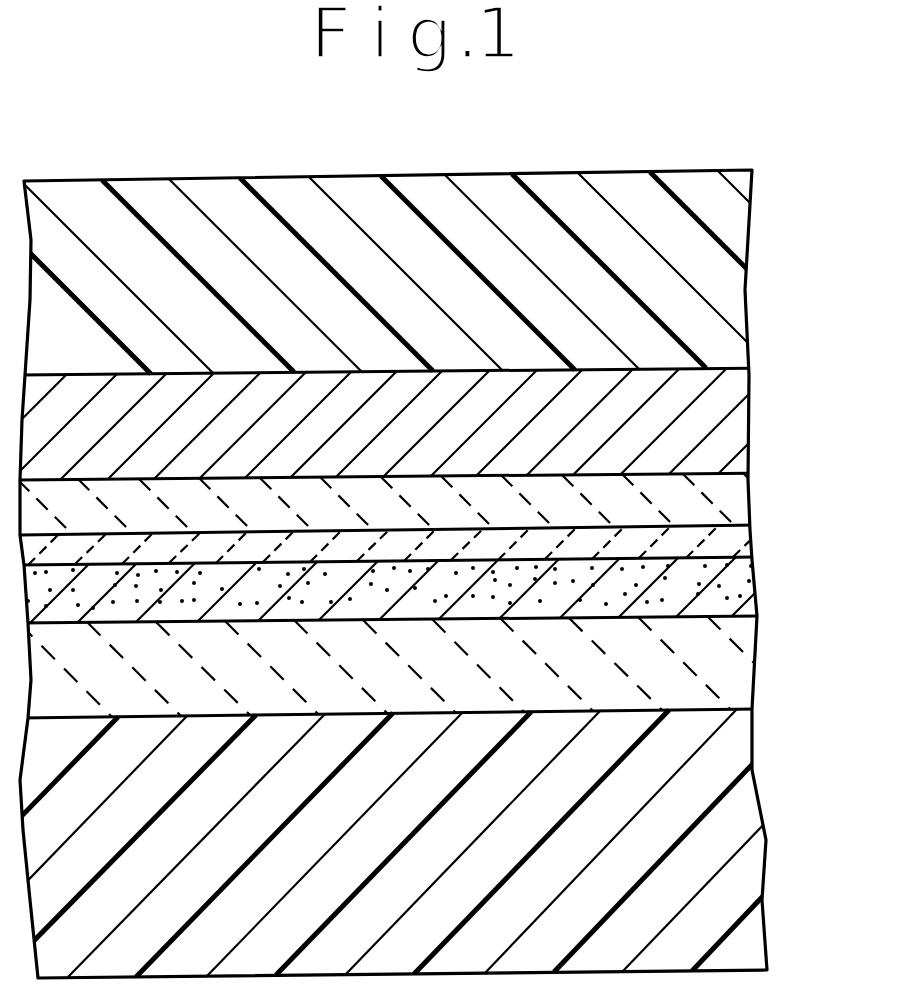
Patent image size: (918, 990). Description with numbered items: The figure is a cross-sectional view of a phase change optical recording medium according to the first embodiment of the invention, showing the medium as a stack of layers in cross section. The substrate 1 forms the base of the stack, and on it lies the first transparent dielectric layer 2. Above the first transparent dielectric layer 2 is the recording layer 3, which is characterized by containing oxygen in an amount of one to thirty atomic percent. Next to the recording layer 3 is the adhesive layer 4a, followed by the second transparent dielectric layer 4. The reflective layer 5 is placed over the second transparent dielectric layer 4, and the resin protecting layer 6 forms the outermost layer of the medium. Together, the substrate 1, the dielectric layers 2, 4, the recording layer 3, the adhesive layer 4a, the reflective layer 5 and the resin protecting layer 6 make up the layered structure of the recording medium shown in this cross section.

The substrate 1 is at (735, 810).
The first transparent dielectric layer 2 is at (738, 662).
The recording layer 3 is at (732, 590).
The second transparent dielectric layer 4 is at (732, 503).
The adhesive layer 4a is at (740, 543).
The reflective layer 5 is at (727, 418).
The resin protecting layer 6 is at (727, 292).